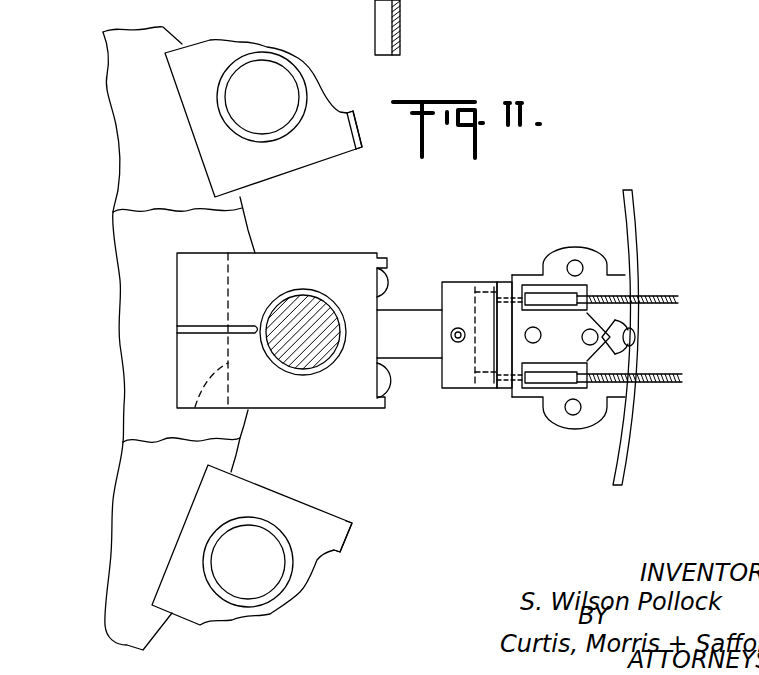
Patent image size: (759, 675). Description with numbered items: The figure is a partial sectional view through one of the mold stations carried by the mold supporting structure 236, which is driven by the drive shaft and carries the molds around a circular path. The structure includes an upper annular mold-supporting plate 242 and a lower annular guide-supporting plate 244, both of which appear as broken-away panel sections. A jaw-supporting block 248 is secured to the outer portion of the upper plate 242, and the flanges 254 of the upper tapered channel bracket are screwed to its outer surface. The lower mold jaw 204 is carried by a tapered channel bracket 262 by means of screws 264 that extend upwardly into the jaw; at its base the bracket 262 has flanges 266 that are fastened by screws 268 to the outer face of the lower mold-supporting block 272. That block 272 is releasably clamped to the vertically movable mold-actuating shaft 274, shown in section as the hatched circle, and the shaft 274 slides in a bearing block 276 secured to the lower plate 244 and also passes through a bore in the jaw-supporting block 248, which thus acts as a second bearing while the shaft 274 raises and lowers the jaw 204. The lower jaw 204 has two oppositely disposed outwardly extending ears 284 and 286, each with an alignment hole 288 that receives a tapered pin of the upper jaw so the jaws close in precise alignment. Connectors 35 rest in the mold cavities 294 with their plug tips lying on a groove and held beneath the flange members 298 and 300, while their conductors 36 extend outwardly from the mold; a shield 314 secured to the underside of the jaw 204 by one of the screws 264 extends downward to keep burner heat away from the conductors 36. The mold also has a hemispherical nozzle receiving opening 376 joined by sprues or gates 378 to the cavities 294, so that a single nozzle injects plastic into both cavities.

The connector 35 is at (510, 297).
The conductor 36 is at (667, 297).
The lower mold jaw 204 is at (515, 280).
The mold supporting structure 236 is at (110, 220).
The upper annular mold-supporting plate 242 is at (123, 88).
The lower annular guide-supporting plate 244 is at (125, 313).
The jaw-supporting block 248 is at (267, 334).
The flange 254 is at (353, 113).
The tapered channel bracket 262 is at (410, 313).
The screw 264 is at (452, 336).
The flange 266 is at (378, 268).
The screw 268 is at (390, 268).
The lower mold-supporting block 272 is at (270, 265).
The mold-actuating shaft 274 is at (263, 78).
The bearing block 276 is at (200, 402).
The ear 284 is at (568, 335).
The ear 286 is at (555, 420).
The alignment hole 288 is at (575, 268).
The mold cavity 294 is at (562, 360).
The flange member 298 is at (487, 390).
The flange member 300 is at (448, 355).
The shield 314 is at (632, 247).
The nozzle receiving opening 376 is at (634, 337).
The sprue or gate 378 is at (615, 317).